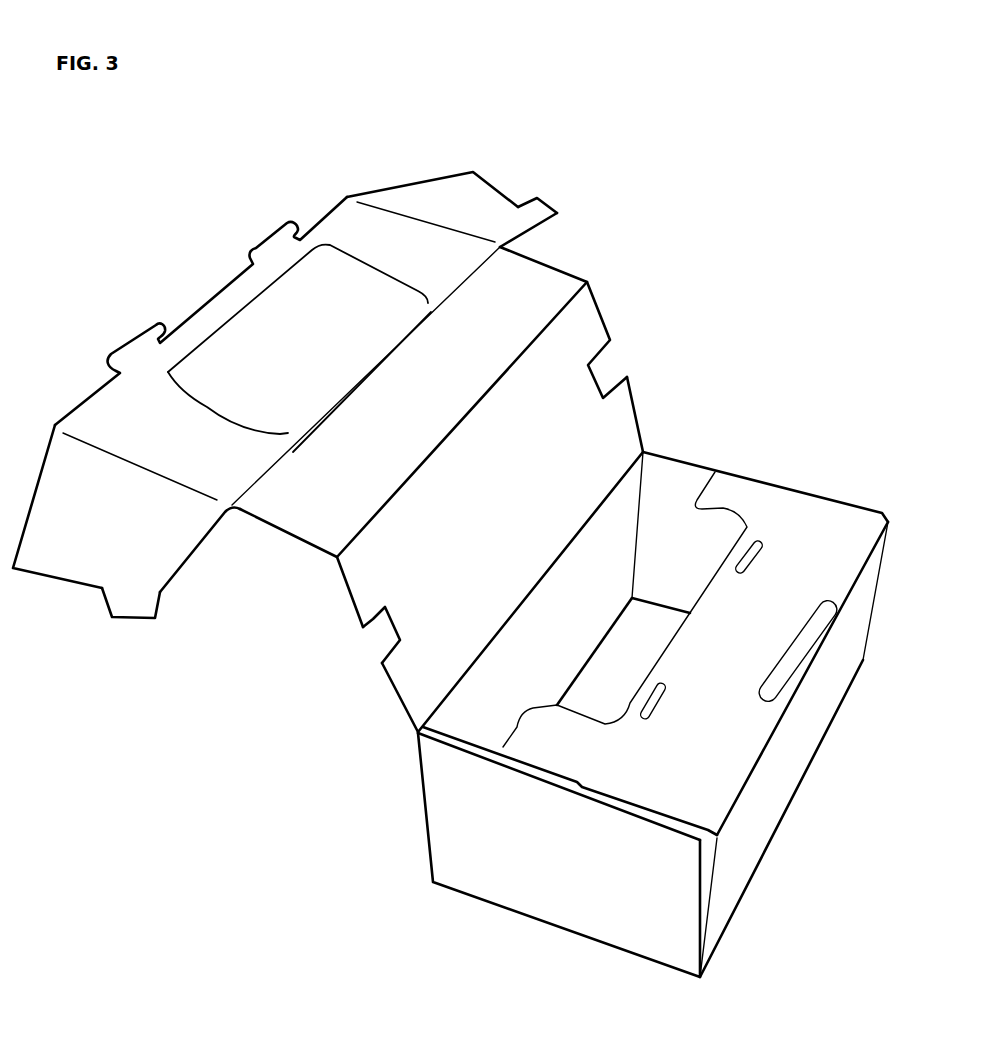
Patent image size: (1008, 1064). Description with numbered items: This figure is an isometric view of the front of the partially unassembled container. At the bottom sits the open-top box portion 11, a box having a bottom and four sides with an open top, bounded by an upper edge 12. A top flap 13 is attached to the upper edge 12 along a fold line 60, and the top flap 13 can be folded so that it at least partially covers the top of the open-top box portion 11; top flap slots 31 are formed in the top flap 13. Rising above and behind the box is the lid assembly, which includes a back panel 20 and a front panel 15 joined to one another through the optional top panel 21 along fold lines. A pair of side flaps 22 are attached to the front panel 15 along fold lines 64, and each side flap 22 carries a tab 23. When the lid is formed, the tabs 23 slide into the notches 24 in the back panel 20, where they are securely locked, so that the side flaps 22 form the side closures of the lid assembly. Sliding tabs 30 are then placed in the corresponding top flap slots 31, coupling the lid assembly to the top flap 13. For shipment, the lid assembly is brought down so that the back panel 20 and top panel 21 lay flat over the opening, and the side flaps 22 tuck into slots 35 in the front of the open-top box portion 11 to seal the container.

The open-top box portion 11 is at (559, 885).
The upper edge 12 is at (412, 716).
The top flap 13 is at (825, 530).
The front panel 15 is at (392, 232).
The back panel 20 is at (613, 430).
The top panel 21 is at (517, 285).
The side flaps 22 is at (447, 198).
The tabs 23 is at (517, 223).
The notches 24 is at (610, 340).
The sliding tabs 30 is at (273, 243).
The top flap slots 31 is at (752, 547).
The slots 35 is at (708, 865).
The fold line 60 is at (847, 583).
The fold lines 64 is at (80, 440).